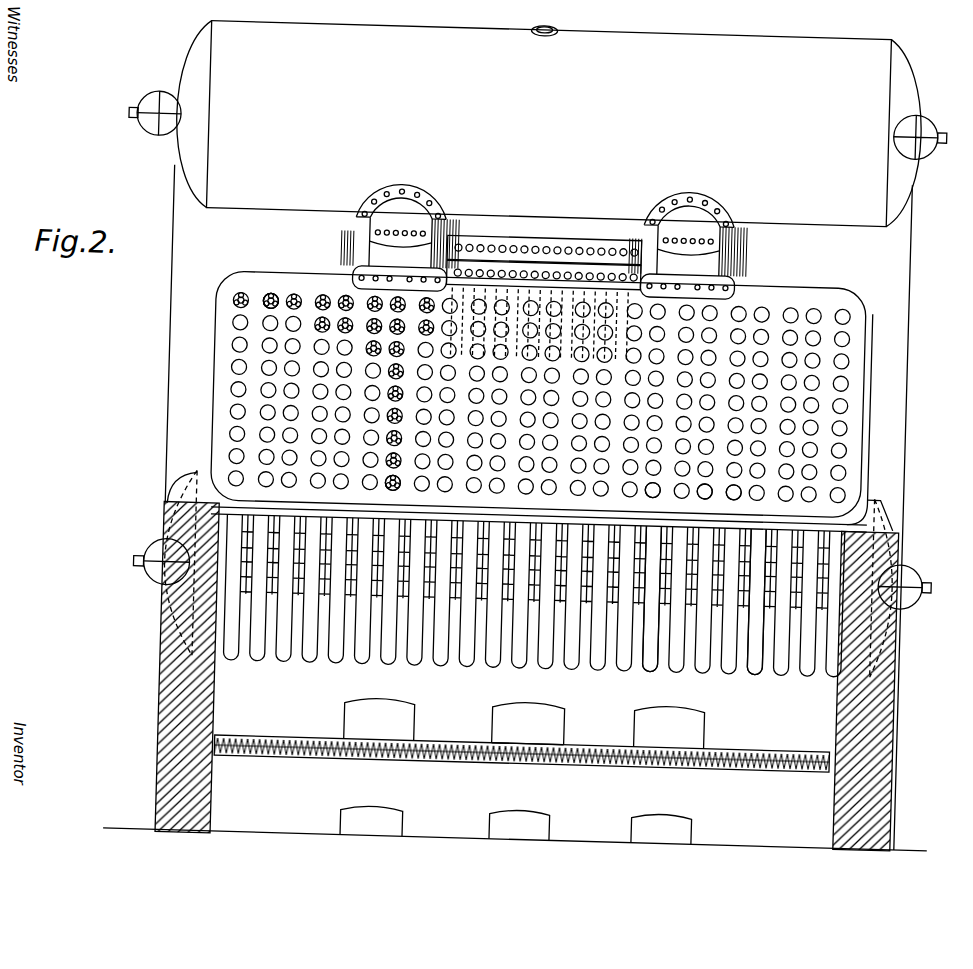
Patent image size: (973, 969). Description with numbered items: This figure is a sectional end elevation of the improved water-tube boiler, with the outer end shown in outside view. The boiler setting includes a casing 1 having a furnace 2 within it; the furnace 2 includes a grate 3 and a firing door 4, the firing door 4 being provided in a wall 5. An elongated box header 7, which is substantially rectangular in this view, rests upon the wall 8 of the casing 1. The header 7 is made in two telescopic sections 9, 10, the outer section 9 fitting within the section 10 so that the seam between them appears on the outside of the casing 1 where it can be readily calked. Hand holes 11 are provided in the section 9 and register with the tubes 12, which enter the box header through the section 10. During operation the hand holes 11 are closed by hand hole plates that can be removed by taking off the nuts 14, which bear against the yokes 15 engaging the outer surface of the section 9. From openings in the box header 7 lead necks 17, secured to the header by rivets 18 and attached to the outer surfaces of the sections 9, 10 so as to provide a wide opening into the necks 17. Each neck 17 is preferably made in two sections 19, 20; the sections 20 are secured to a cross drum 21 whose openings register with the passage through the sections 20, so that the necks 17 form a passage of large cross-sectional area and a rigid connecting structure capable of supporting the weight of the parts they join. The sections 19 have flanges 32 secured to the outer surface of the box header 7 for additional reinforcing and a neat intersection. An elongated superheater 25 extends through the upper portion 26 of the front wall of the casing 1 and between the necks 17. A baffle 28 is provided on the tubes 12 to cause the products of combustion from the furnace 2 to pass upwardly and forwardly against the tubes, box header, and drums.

The casing 1 is at (169, 696).
The furnace 2 is at (517, 757).
The grate 3 is at (503, 766).
The firing door 4 is at (497, 721).
The wall 5 is at (528, 728).
The box header 7 is at (541, 398).
The wall 8 is at (769, 672).
The outer section 9 is at (539, 407).
The section 10 is at (603, 528).
The hand holes 11 is at (265, 309).
The tubes 12 is at (350, 669).
The nuts 14 is at (280, 307).
The yokes 15 is at (250, 306).
The necks 17 is at (365, 241).
The rivets 18 is at (380, 287).
The neck section 19 is at (544, 257).
The neck section 20 is at (545, 208).
The cross drum 21 is at (538, 121).
The superheater 25 is at (521, 250).
The upper portion of the front wall 26 is at (534, 507).
The baffle 28 is at (665, 601).
The flanges 32 is at (349, 284).